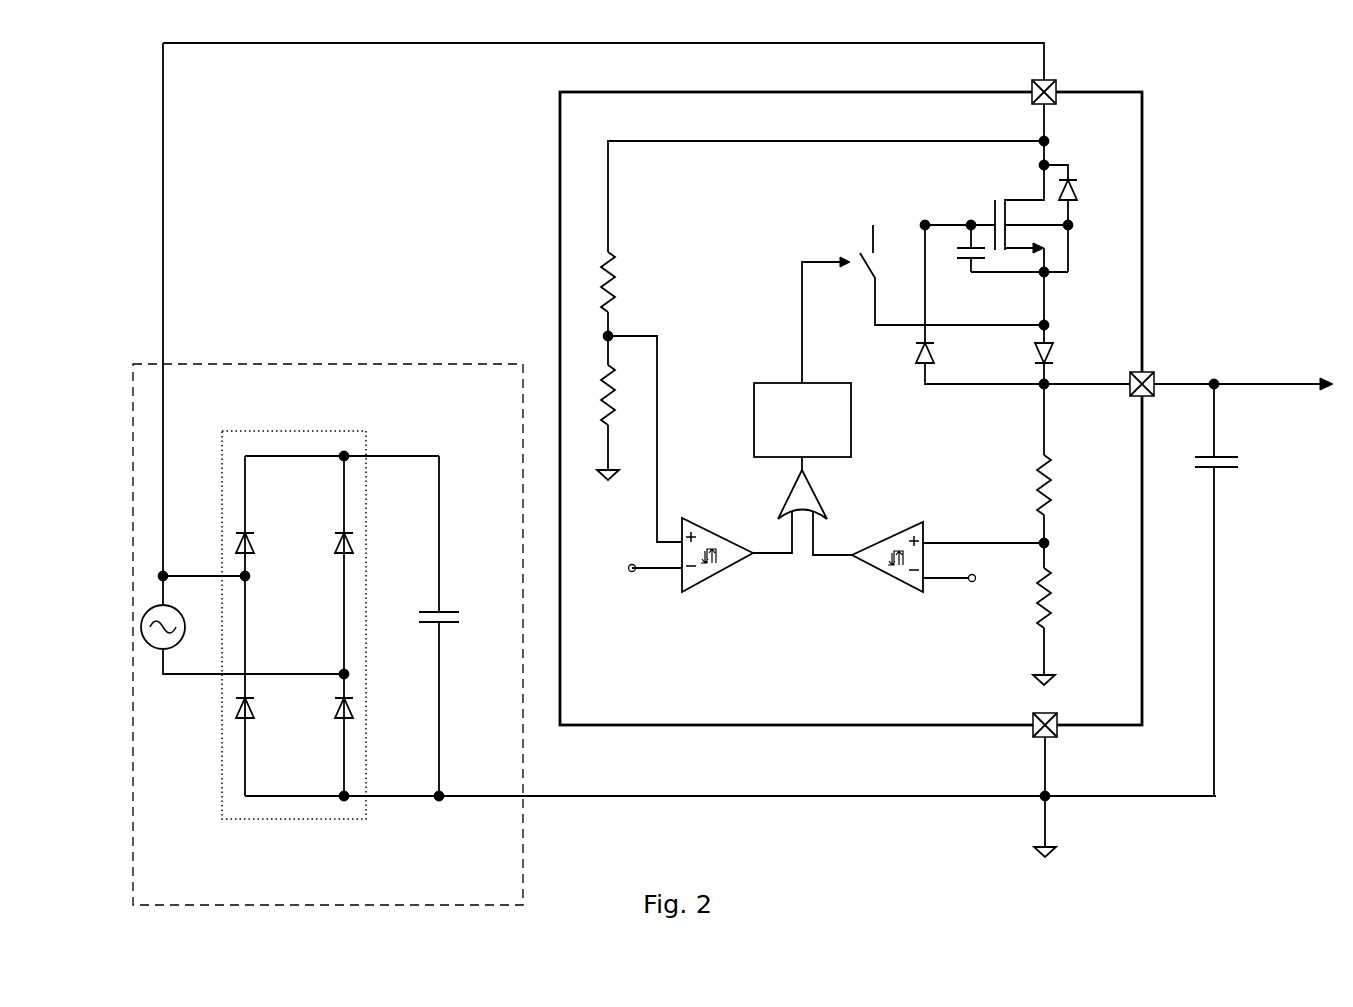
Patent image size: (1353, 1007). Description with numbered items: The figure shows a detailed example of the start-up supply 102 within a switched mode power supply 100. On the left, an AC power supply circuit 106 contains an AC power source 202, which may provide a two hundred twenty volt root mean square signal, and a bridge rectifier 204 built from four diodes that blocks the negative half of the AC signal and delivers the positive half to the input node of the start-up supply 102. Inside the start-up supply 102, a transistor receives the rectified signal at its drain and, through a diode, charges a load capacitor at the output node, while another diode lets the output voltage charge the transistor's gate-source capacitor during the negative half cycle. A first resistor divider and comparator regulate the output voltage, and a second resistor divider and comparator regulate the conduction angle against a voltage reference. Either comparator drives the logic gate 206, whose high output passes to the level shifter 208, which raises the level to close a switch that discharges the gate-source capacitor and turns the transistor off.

The switched mode power supply 100 is at (1233, 83).
The start-up supply 102 is at (836, 704).
The AC power supply circuit 106 is at (330, 364).
The AC power source 202 is at (186, 614).
The bridge rectifier 204 is at (310, 431).
The logic gate 206 is at (790, 498).
The level shifter 208 is at (772, 381).